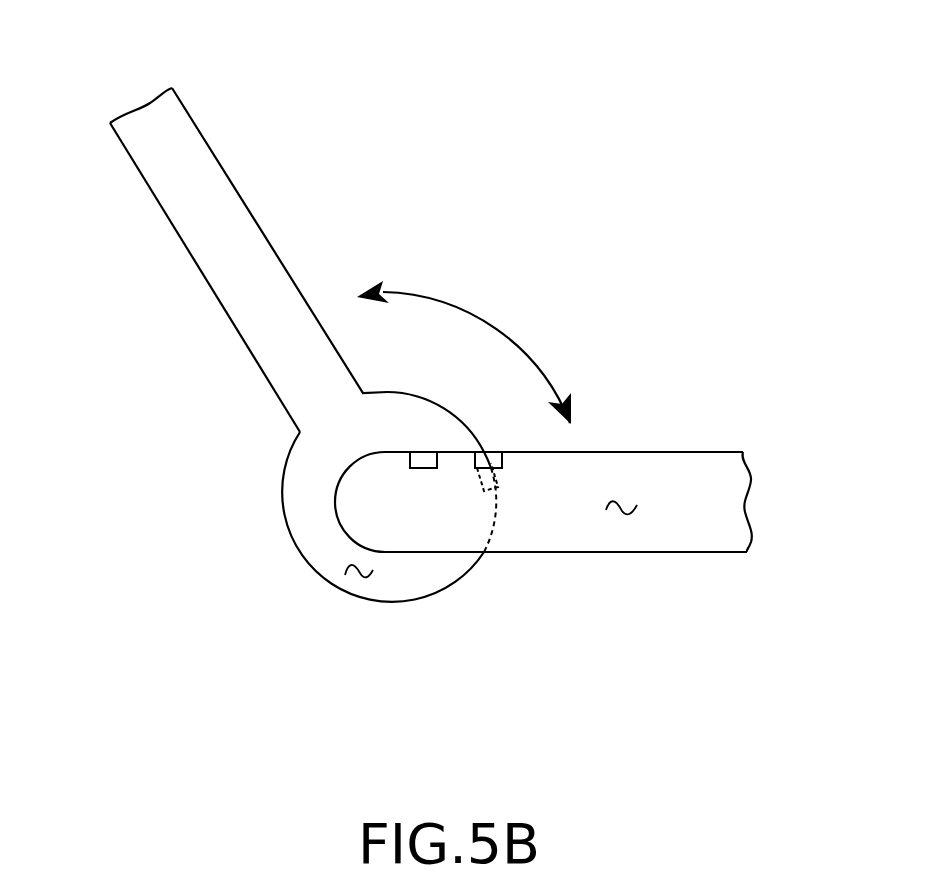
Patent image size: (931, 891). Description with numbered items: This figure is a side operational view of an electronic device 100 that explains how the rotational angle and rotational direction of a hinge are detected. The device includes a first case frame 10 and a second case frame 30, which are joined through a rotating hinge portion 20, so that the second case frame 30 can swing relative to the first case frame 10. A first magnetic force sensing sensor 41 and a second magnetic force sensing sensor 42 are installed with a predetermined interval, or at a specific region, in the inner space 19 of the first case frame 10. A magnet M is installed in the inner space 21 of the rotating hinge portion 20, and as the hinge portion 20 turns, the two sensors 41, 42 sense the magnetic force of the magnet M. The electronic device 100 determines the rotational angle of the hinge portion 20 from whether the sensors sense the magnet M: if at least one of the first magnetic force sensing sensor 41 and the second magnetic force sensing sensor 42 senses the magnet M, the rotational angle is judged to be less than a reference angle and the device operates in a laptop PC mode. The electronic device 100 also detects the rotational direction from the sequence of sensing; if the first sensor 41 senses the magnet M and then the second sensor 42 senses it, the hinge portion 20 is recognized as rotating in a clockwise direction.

The electronic device 100 is at (425, 360).
The first case frame 10 is at (672, 483).
The inner space of the first case frame 19 is at (622, 511).
The rotating hinge portion 20 is at (300, 487).
The inner space of the rotating hinge portion 21 is at (360, 573).
The second case frame 30 is at (208, 195).
The first magnetic force sensing sensor 41 is at (425, 455).
The second magnetic force sensing sensor 42 is at (501, 459).
The magnet M is at (495, 486).